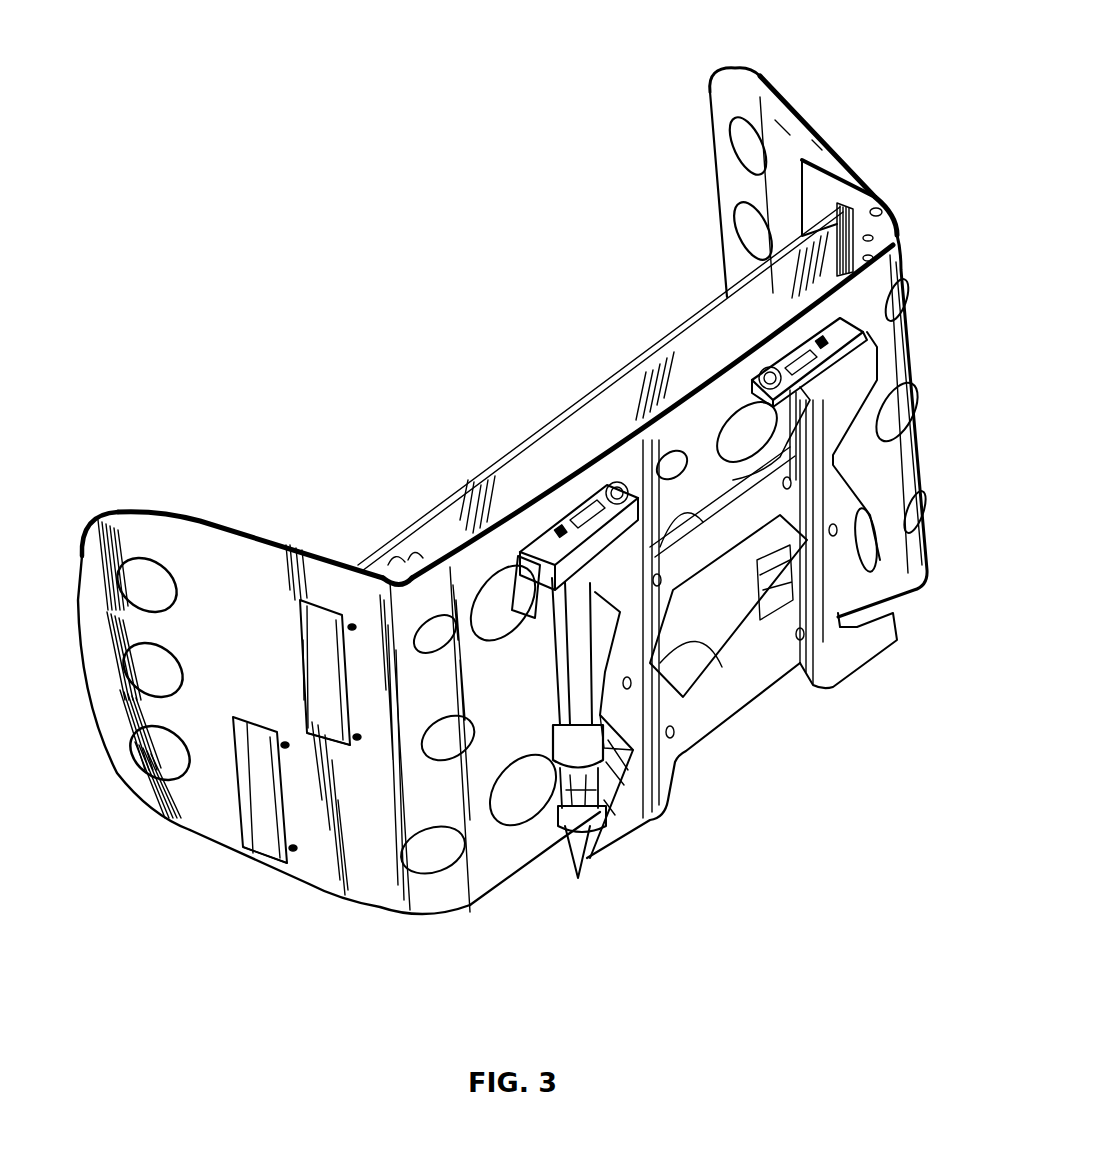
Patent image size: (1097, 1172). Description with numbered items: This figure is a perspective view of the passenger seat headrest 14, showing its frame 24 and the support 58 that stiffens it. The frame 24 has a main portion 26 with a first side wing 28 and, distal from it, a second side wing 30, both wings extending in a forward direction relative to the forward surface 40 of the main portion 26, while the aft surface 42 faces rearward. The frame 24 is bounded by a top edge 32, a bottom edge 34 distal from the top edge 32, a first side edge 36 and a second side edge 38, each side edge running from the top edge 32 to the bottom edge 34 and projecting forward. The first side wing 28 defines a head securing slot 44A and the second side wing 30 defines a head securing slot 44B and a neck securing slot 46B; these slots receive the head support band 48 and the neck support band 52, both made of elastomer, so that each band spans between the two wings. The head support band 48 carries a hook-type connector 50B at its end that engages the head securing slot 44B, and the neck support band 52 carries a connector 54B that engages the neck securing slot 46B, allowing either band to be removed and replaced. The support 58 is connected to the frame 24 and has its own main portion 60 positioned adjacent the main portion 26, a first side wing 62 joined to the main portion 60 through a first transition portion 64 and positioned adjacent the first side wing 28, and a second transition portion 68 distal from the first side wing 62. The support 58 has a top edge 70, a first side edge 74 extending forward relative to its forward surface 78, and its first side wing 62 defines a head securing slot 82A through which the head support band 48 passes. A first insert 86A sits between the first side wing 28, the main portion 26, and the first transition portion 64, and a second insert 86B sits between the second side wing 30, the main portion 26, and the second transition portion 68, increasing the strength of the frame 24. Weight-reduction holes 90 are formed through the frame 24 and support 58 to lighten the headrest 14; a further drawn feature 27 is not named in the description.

The passenger seat headrest 14 is at (412, 155).
The frame 24 is at (900, 247).
The main portion 26 is at (480, 890).
The hook 27 is at (850, 660).
The first side wing 28 is at (750, 80).
The second side wing 30 is at (207, 827).
The top edge 32 is at (190, 512).
The bottom edge 34 is at (313, 887).
The first side edge 36 is at (708, 100).
The second side edge 38 is at (112, 518).
The forward surface 40 is at (733, 83).
The aft surface 42 is at (260, 550).
The head securing slot 44A is at (850, 200).
The head securing slot 44B is at (300, 652).
The neck securing slot 46B is at (232, 730).
The head support band 48 is at (528, 458).
The connector 50B is at (343, 748).
The neck support band 52 is at (305, 695).
The connector 54B is at (273, 853).
The support 58 is at (787, 127).
The main portion 60 is at (712, 372).
The first side wing 62 is at (817, 147).
The first transition portion 64 is at (805, 232).
The second transition portion 68 is at (443, 543).
The top edge 70 is at (833, 157).
The first side edge 74 is at (733, 183).
The forward surface 78 is at (763, 97).
The head securing slot 82A is at (833, 180).
The first insert 86A is at (877, 213).
The second insert 86B is at (395, 568).
The weight-reduction holes 90 is at (133, 557).